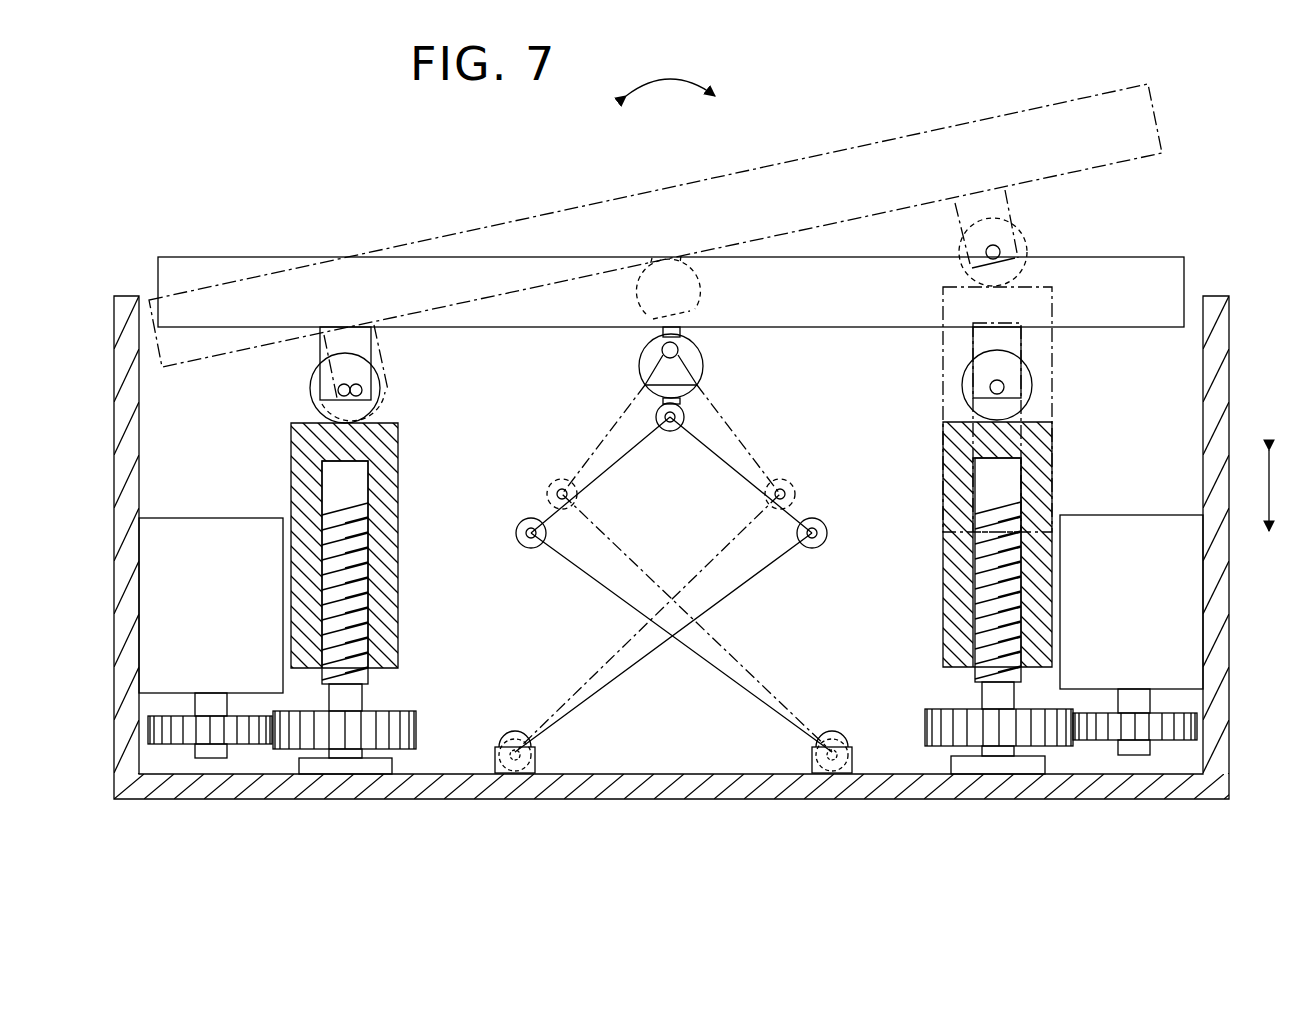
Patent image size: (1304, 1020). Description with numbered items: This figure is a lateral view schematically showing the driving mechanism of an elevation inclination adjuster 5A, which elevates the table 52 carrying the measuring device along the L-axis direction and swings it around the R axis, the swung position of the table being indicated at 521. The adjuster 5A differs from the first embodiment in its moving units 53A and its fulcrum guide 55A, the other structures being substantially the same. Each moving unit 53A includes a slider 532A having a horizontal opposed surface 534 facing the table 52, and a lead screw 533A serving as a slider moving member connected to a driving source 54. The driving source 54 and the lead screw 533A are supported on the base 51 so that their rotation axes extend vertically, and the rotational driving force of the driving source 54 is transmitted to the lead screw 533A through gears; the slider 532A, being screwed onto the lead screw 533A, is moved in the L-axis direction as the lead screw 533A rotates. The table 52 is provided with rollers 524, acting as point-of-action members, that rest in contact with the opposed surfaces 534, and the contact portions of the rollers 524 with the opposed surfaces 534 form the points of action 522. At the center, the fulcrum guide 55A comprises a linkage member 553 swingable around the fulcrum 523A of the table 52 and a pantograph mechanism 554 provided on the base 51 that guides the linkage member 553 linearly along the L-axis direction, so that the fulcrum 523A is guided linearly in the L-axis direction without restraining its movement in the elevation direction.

The elevation inclination adjuster 5A is at (195, 143).
The base 51 is at (782, 790).
The table 52 is at (800, 270).
The tilted stage plate position 521 is at (568, 257).
The point of action 522 is at (355, 436).
The fulcrum 523A is at (697, 365).
The roller 524 is at (380, 398).
The moving unit 53A is at (339, 818).
The slider 532A is at (388, 490).
The lead screw 533A is at (357, 617).
The opposed surface 534 is at (305, 422).
The driving source 54 is at (178, 528).
The fulcrum guide 55A is at (679, 735).
The linkage member 553 is at (684, 392).
The pantograph mechanism 554 is at (745, 582).